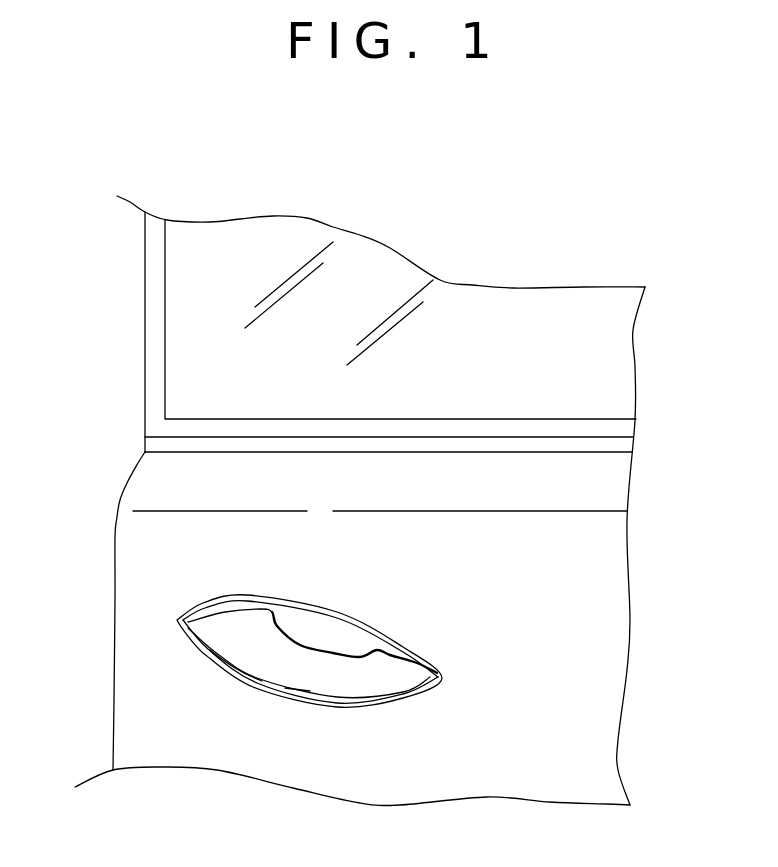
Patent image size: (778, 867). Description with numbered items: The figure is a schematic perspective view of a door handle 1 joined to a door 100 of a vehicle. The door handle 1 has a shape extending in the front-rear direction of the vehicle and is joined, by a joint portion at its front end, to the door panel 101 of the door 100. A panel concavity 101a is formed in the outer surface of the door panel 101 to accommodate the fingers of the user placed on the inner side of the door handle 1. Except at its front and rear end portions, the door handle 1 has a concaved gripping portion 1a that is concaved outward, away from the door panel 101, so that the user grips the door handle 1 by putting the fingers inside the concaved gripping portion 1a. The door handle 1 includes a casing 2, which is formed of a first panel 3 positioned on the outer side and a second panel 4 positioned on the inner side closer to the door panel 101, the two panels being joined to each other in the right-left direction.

The door handle 1 is at (333, 680).
The concaved gripping portion 1a is at (317, 645).
The casing 2 is at (268, 683).
The first panel 3 is at (298, 680).
The second panel 4 is at (393, 655).
The door 100 is at (603, 657).
The door panel 101 is at (598, 702).
The panel concavity 101a is at (298, 618).